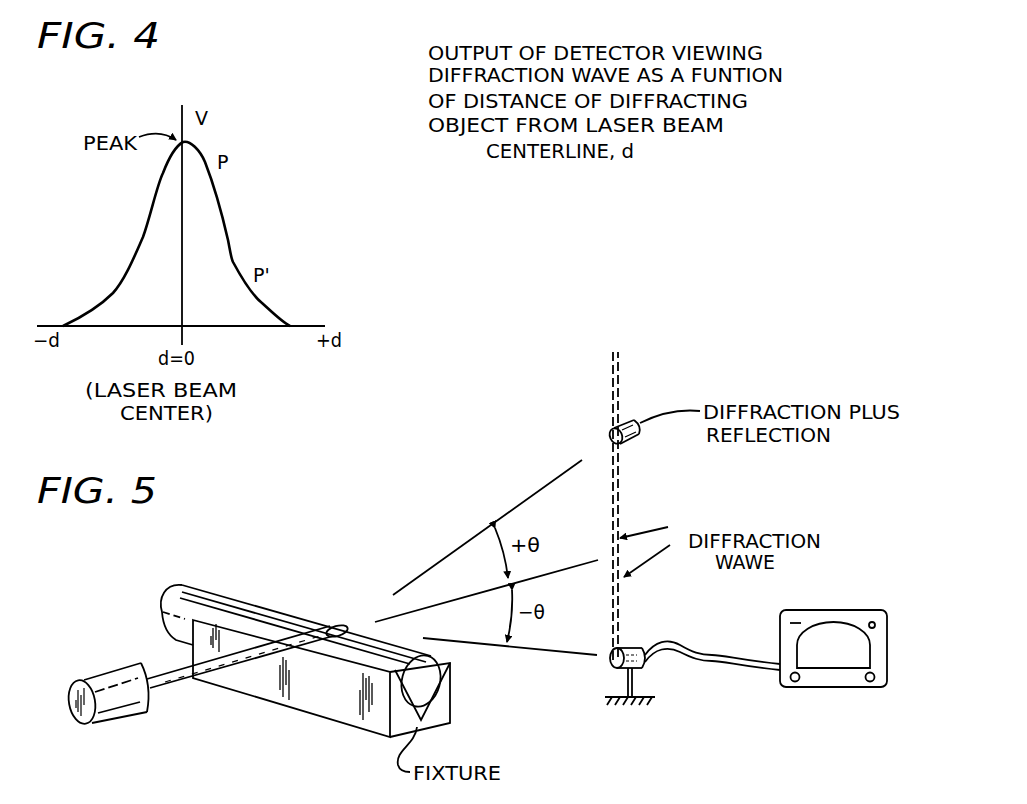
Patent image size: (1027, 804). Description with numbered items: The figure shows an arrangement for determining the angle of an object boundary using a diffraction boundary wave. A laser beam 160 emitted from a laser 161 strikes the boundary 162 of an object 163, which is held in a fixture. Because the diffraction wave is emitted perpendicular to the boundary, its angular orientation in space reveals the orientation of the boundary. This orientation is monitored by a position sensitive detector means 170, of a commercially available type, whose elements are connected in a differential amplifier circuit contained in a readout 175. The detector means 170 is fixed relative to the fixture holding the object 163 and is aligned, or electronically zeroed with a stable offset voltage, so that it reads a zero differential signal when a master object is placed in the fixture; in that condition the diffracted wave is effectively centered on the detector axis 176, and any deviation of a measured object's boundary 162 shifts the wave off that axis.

The laser beam 160 is at (167, 672).
The laser 161 is at (118, 708).
The boundary 162 is at (320, 622).
The object 163 is at (428, 688).
The position sensitive detector means 170 is at (623, 648).
The readout 175 is at (845, 688).
The detector axis 176 is at (608, 660).